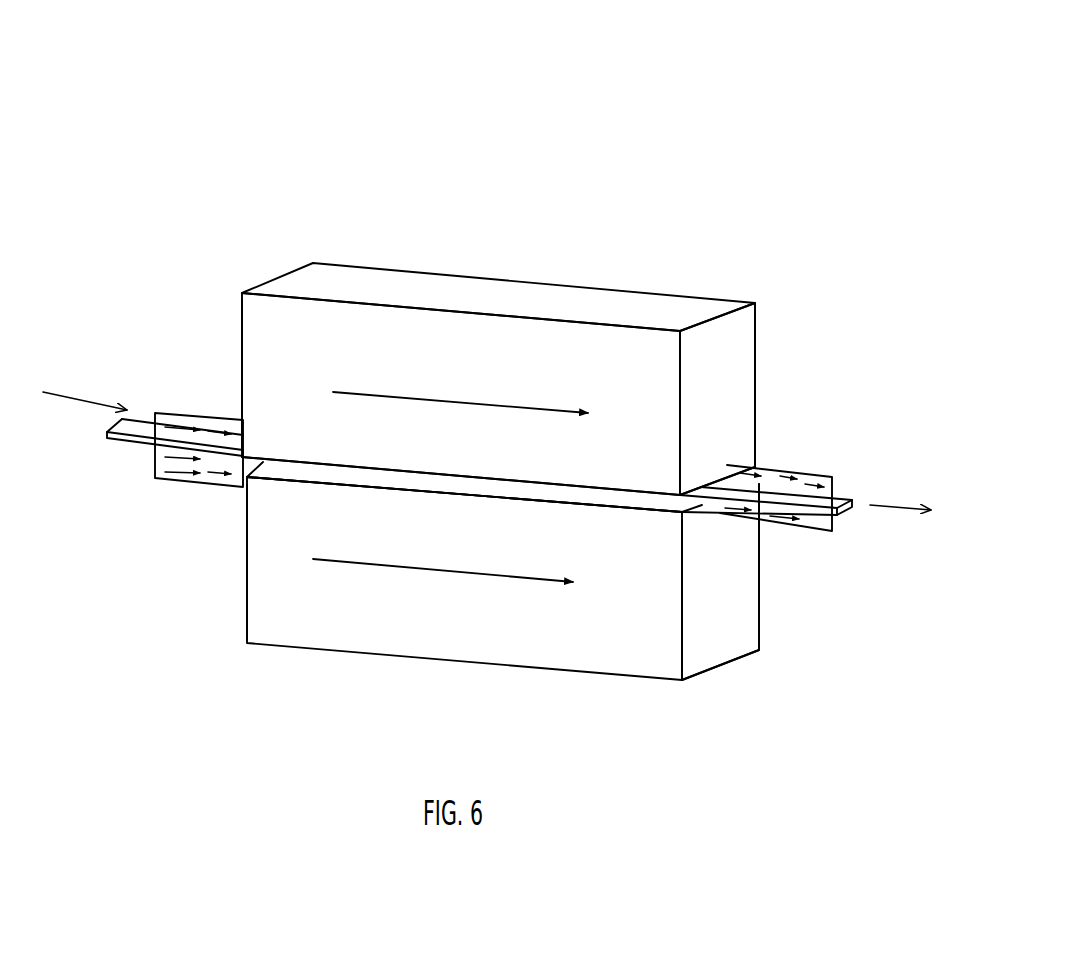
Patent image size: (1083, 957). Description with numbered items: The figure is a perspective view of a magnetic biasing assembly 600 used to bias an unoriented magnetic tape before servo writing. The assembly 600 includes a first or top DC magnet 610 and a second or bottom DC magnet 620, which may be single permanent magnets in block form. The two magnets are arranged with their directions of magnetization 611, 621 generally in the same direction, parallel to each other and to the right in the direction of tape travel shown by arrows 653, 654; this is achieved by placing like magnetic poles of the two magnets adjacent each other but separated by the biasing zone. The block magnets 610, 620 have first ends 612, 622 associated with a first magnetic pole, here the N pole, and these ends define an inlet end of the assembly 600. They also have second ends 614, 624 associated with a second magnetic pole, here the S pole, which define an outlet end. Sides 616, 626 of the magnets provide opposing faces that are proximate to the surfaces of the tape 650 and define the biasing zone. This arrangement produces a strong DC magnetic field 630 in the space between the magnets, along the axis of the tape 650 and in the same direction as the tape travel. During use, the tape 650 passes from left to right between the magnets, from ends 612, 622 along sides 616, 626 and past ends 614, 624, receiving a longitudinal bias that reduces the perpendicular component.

The magnetic biasing assembly 600 is at (643, 92).
The first DC magnet 610 is at (540, 300).
The direction of magnetization 611 is at (440, 397).
The first end 612 is at (243, 343).
The second end 614 is at (712, 372).
The side 616 is at (433, 479).
The second DC magnet 620 is at (565, 638).
The direction of magnetization 621 is at (515, 582).
The first end 622 is at (247, 580).
The second end 624 is at (705, 638).
The side 626 is at (530, 493).
The DC magnetic field 630 is at (774, 465).
The unoriented tape 650 is at (112, 445).
The tape travel direction arrow 653 is at (73, 398).
The tape travel direction arrow 654 is at (905, 508).